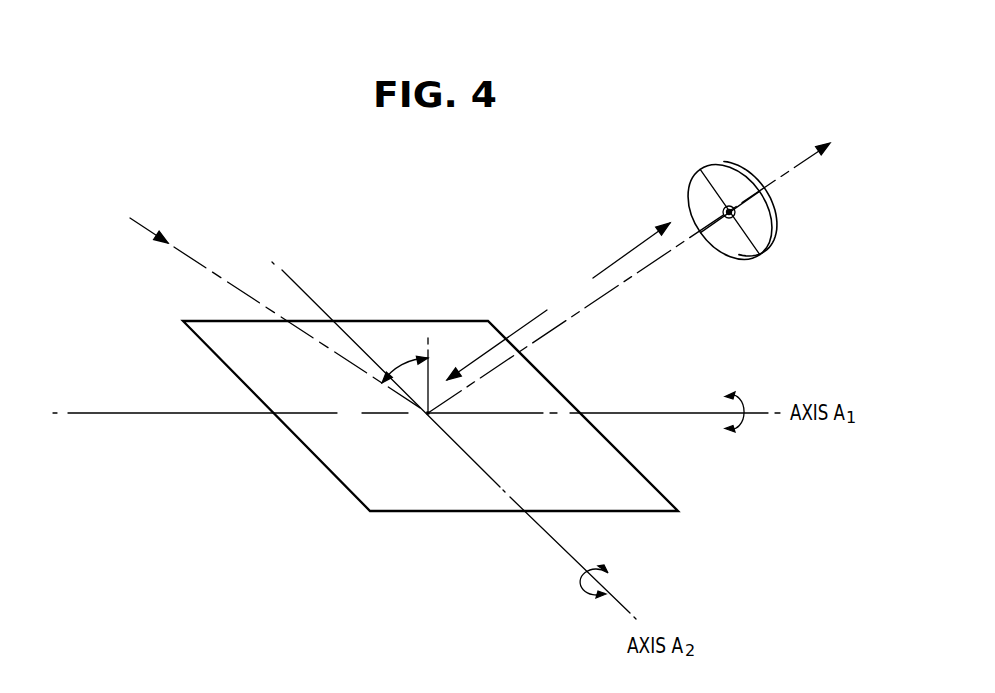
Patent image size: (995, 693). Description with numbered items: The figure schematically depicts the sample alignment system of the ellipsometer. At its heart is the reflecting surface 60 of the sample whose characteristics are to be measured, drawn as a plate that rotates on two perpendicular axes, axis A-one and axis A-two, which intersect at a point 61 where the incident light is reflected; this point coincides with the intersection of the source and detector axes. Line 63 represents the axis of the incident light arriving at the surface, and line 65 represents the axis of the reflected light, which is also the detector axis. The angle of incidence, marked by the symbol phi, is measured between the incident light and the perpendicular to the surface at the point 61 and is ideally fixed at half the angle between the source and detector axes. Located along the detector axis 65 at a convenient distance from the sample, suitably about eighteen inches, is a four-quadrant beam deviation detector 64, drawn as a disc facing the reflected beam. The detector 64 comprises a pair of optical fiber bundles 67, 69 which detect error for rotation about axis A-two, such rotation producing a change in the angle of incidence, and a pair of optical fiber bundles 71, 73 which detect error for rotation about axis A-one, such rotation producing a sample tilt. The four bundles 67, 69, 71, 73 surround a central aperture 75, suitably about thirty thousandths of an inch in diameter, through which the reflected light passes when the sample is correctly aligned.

The reflecting surface 60 is at (548, 391).
The point 61 is at (431, 416).
The axis of incident light 63 is at (228, 283).
The 4-quadrant beam deviation detector 64 is at (738, 224).
The axis of reflected light 65 is at (666, 257).
The optical fiber bundle 67 is at (708, 172).
The optical fiber bundle 69 is at (728, 240).
The optical fiber bundle 71 is at (700, 203).
The optical fiber bundle 73 is at (760, 230).
The aperture 75 is at (735, 211).